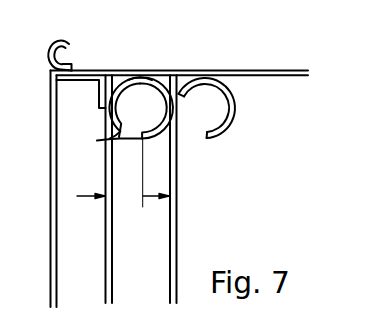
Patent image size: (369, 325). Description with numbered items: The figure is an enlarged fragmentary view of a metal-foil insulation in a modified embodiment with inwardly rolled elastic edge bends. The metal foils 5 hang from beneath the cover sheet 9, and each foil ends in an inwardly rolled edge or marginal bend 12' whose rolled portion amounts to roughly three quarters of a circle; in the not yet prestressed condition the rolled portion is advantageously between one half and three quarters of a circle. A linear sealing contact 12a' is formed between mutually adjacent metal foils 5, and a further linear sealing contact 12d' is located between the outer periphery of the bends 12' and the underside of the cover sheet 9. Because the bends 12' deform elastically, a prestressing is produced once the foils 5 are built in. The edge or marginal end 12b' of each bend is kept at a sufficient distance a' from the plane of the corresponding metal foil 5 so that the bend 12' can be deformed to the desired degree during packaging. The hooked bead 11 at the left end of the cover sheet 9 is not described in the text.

The metal foil 5 is at (177, 182).
The cover sheet 9 is at (260, 70).
The hook-shaped bead of rail 11 is at (82, 72).
The inwardly rolled edge bend 12' is at (225, 108).
The linear sealing contact 12a' is at (172, 85).
The edge end 12b' is at (104, 142).
The linear sealing contact 12d' is at (158, 58).
The distance a' is at (123, 173).